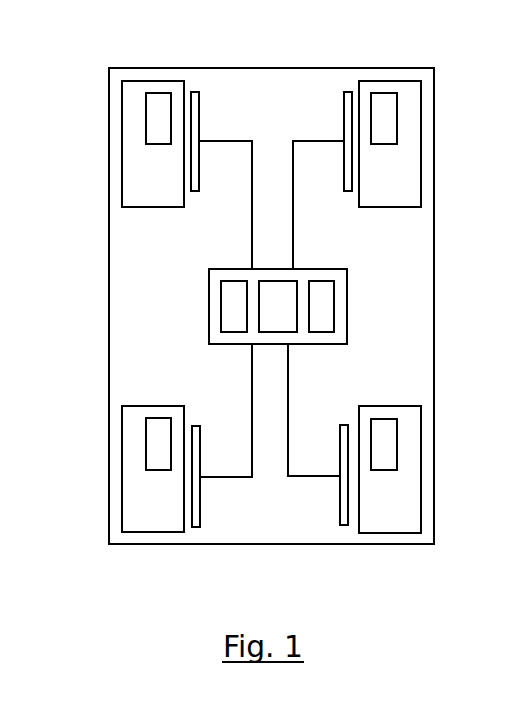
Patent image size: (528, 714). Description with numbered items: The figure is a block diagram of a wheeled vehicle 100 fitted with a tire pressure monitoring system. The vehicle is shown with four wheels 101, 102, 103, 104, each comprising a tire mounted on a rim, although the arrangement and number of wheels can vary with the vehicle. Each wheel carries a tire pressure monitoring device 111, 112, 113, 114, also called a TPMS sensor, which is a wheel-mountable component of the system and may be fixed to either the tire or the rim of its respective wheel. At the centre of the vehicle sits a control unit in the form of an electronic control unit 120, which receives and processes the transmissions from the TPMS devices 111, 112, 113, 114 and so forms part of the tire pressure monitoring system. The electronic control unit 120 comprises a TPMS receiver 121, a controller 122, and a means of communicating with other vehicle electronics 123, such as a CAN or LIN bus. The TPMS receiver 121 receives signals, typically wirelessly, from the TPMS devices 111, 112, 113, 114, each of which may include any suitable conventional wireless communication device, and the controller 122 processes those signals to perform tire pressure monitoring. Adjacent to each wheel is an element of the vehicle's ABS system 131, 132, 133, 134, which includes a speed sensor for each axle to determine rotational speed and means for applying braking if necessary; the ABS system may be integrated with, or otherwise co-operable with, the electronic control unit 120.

The wheeled vehicle 100 is at (440, 281).
The wheel 101 is at (135, 118).
The wheel 102 is at (409, 118).
The wheel 103 is at (135, 495).
The wheel 104 is at (409, 493).
The tire pressure monitoring device 111 is at (159, 132).
The tire pressure monitoring device 112 is at (383, 131).
The tire pressure monitoring device 113 is at (159, 431).
The tire pressure monitoring device 114 is at (383, 443).
The electronic control unit 120 is at (209, 317).
The TPMS receiver 121 is at (233, 293).
The controller 122 is at (278, 293).
The means of communicating with other vehicle electronics 123 is at (321, 293).
The ABS system 131 is at (203, 95).
The ABS system 132 is at (343, 105).
The ABS system 133 is at (197, 528).
The ABS system 134 is at (342, 528).